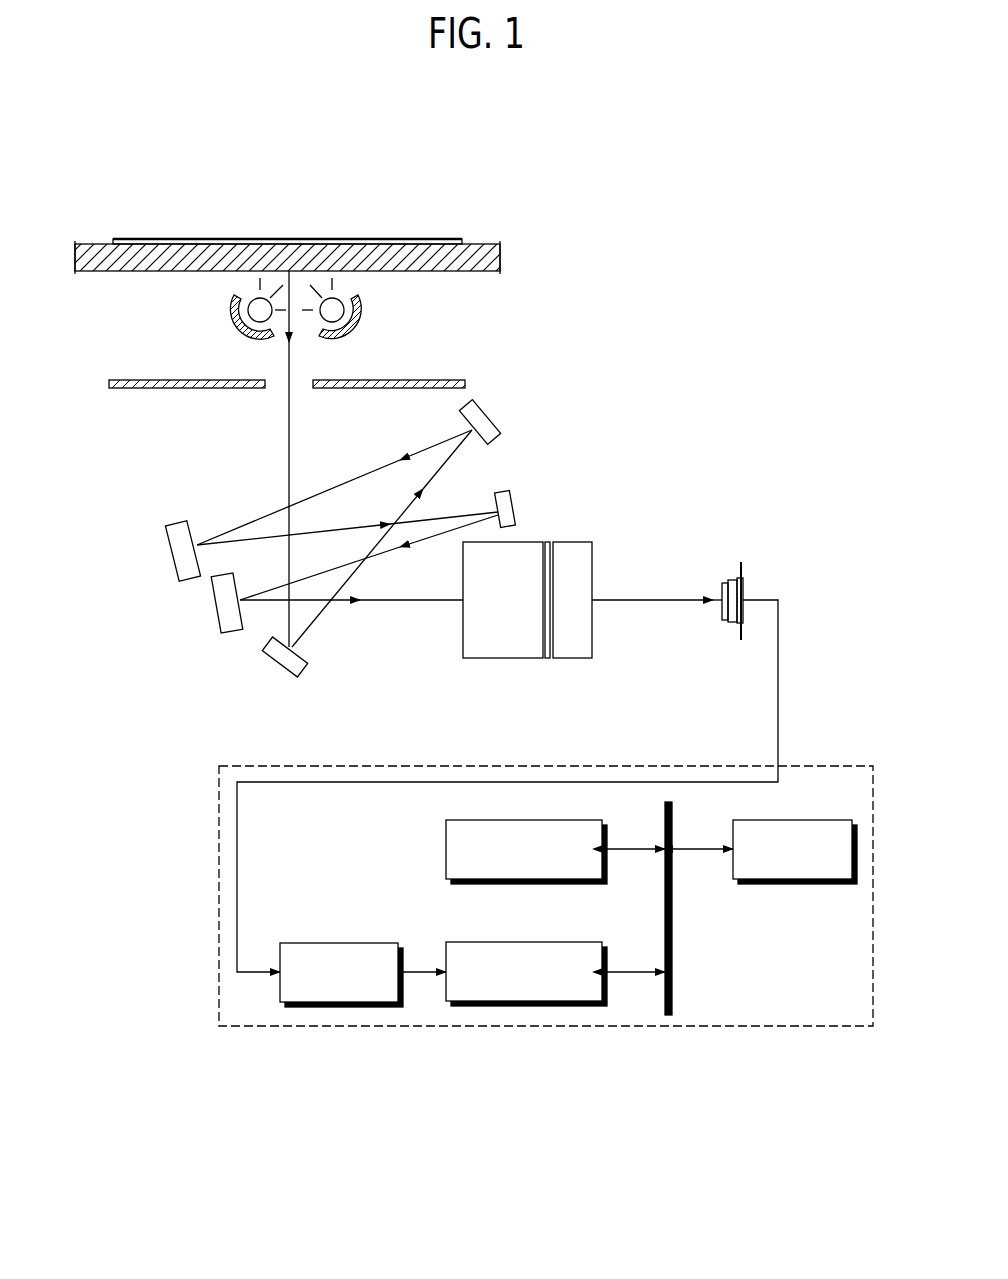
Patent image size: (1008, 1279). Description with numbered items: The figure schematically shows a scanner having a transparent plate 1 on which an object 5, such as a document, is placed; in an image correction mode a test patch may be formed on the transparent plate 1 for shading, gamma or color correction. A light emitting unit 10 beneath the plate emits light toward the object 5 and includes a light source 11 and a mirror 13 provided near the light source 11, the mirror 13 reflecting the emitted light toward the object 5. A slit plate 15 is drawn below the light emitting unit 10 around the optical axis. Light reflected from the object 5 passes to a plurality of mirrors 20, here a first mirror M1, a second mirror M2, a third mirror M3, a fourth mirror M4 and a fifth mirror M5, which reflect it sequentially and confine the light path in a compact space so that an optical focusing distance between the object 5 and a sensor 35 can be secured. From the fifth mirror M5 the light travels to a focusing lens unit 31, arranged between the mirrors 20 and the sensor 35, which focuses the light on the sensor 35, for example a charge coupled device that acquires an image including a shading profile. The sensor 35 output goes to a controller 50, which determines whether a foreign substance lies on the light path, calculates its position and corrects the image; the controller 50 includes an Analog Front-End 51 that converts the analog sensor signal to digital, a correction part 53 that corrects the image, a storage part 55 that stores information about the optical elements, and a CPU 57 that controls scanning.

The transparent plate 1 is at (478, 244).
The object 5 is at (390, 239).
The light emitting unit 10 is at (351, 314).
The light source 11 is at (337, 305).
The mirror 13 is at (350, 323).
The slit plate 15 is at (123, 380).
The mirrors 20 is at (173, 495).
The first mirror M1 is at (283, 662).
The second mirror M2 is at (483, 420).
The third mirror M3 is at (177, 552).
The fourth mirror M4 is at (513, 495).
The fifth mirror M5 is at (217, 618).
The focusing lens unit 31 is at (495, 659).
The sensor 35 is at (735, 627).
The controller 50 is at (219, 887).
The Analog Front-End (AFE) 51 is at (343, 1003).
The correction part 53 is at (527, 1002).
The storage part 55 is at (537, 820).
The CPU 57 is at (797, 885).